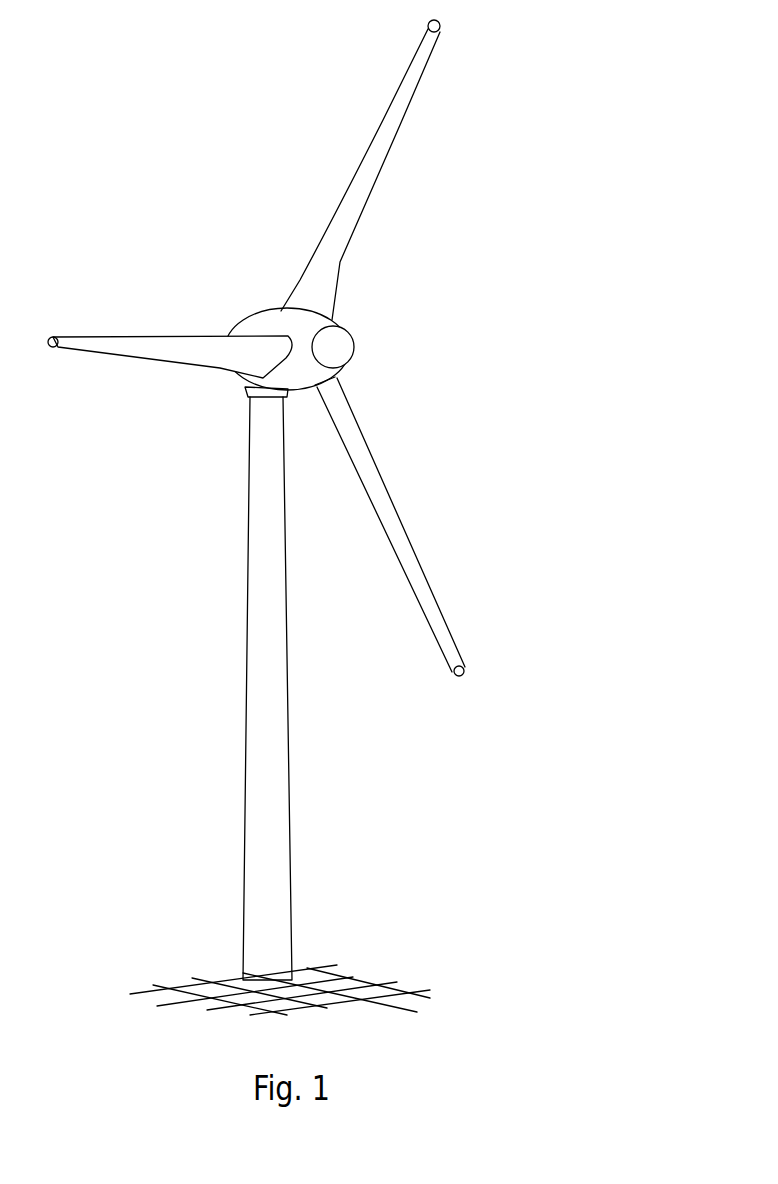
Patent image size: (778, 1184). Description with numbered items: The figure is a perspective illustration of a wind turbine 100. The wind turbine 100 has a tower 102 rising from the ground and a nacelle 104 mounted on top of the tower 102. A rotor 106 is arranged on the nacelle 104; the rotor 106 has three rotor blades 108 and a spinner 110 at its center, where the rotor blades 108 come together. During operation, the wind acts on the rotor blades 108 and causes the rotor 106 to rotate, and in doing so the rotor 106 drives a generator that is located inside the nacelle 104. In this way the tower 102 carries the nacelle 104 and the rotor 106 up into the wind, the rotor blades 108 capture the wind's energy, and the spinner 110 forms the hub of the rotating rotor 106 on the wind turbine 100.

The wind turbine 100 is at (208, 461).
The tower 102 is at (272, 777).
The nacelle 104 is at (260, 320).
The rotor 106 is at (414, 276).
The rotor blades 108 is at (110, 343).
The spinner 110 is at (339, 348).